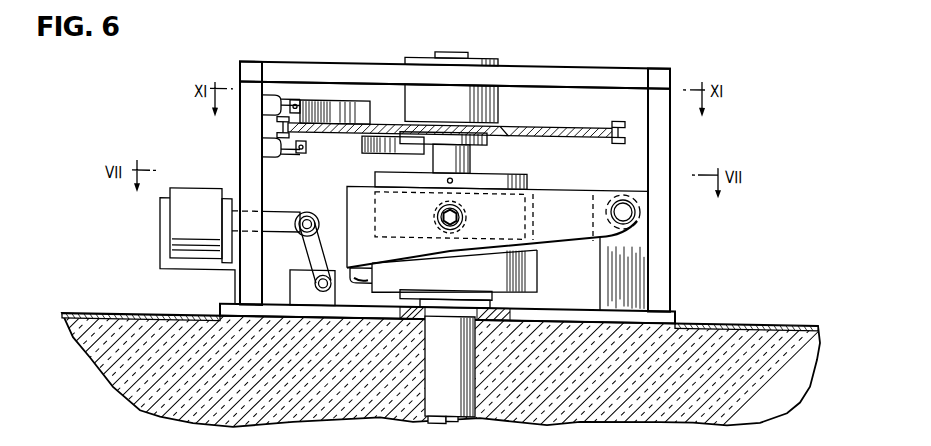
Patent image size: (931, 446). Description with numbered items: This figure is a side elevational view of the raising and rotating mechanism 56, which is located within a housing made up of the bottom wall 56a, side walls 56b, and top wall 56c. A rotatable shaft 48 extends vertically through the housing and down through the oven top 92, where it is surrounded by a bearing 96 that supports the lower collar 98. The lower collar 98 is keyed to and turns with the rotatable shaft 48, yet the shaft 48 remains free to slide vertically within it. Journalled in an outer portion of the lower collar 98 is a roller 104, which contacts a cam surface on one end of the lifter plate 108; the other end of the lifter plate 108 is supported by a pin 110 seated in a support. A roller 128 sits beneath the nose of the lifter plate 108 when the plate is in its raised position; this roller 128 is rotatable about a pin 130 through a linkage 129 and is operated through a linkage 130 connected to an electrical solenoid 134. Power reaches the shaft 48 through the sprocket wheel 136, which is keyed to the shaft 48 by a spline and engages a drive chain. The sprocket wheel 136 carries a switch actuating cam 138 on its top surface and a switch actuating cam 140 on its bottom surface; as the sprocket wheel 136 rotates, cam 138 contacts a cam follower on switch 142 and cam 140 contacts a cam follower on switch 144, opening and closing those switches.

The rotatable shaft 48 is at (461, 50).
The raising and rotating mechanism 56 is at (639, 60).
The bottom wall 56a is at (632, 306).
The side walls 56b is at (660, 163).
The top wall 56c is at (575, 69).
The oven top 92 is at (760, 313).
The bearing 96 is at (503, 298).
The lower collar 98 is at (527, 263).
The roller 104 is at (372, 278).
The lifter plate 108 is at (578, 180).
The pin 110 is at (631, 212).
The roller 128 is at (302, 215).
The linkage 129 is at (310, 244).
The pin / linkage 130 is at (316, 282).
The electrical solenoid 134 is at (204, 208).
The sprocket wheel 136 is at (567, 123).
The switch actuating cam 138 is at (355, 98).
The switch actuating cam 140 is at (375, 148).
The switch 142 is at (276, 94).
The switch 144 is at (272, 157).